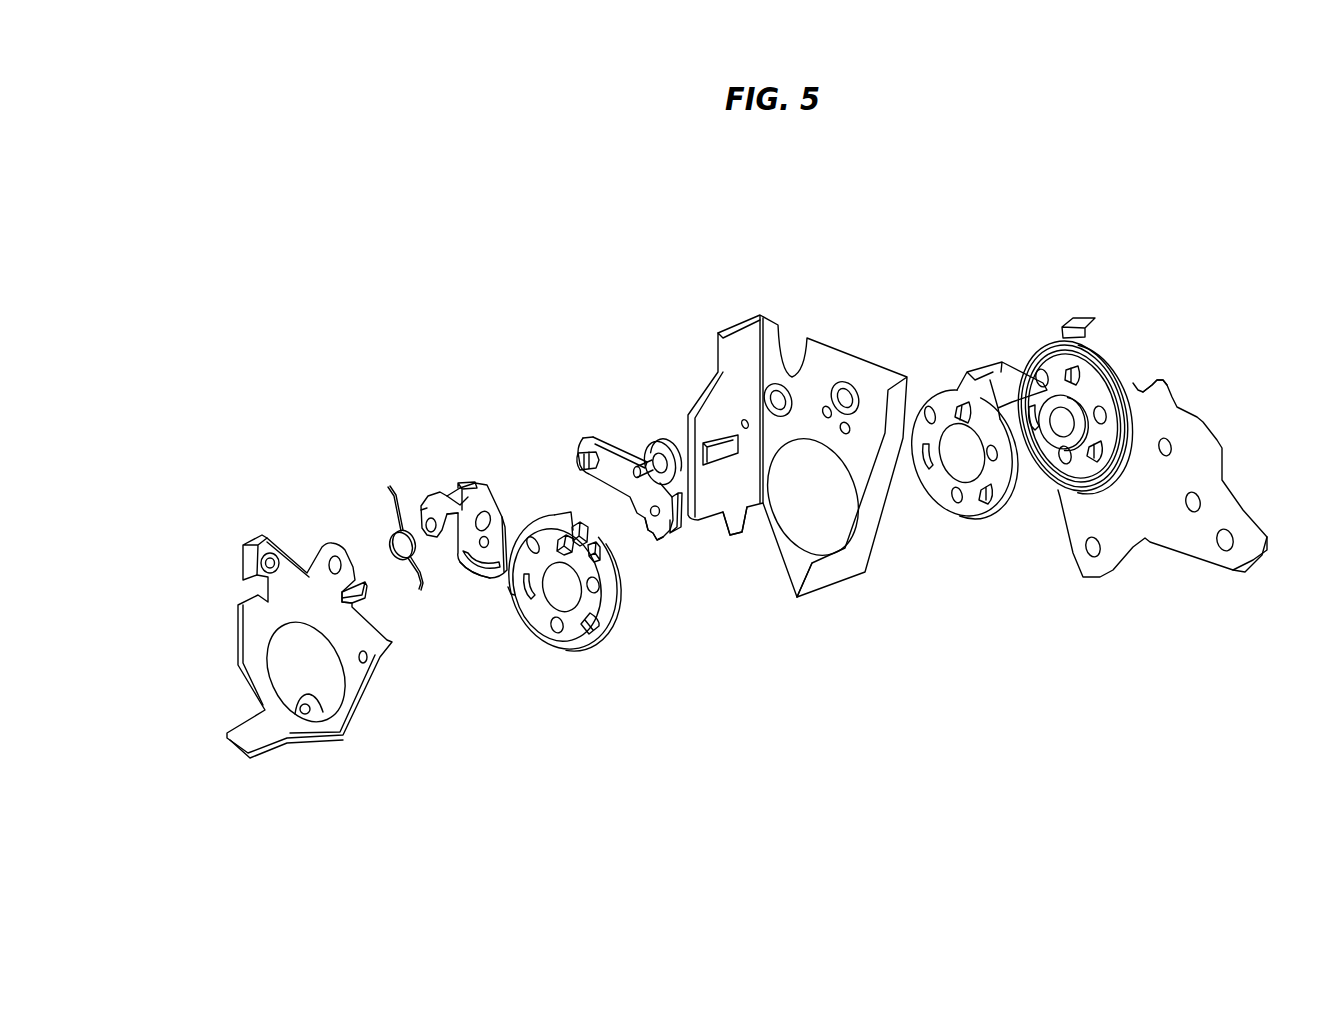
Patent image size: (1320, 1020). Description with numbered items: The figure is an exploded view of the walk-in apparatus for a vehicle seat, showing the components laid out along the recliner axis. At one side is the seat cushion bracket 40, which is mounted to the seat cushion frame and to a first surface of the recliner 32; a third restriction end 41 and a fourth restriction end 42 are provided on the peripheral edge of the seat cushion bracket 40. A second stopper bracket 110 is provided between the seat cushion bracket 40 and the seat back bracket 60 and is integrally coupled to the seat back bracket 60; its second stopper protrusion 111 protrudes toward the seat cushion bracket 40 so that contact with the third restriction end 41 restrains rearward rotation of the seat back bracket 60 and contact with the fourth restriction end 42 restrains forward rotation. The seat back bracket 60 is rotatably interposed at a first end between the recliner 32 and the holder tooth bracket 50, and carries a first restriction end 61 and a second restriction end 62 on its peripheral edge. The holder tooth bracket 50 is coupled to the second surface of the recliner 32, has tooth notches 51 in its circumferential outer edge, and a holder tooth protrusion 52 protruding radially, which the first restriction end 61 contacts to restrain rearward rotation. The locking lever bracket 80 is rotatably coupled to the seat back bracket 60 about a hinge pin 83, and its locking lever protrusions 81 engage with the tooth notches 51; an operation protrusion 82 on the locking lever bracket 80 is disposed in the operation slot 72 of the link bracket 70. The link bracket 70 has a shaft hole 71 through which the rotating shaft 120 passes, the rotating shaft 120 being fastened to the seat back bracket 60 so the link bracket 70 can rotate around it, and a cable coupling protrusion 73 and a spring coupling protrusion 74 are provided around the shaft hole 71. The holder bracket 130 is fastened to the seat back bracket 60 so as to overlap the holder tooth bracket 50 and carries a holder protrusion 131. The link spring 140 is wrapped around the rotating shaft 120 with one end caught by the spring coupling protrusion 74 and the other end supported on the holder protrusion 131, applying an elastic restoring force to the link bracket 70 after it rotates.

The recliner 32 is at (1100, 352).
The seat cushion bracket 40 is at (1163, 533).
The third restriction end 41 is at (1064, 326).
The fourth restriction end 42 is at (1152, 378).
The holder tooth bracket 50 is at (583, 663).
The tooth notches 51 is at (603, 552).
The holder tooth protrusion 52 is at (508, 590).
The seat back bracket 60 is at (827, 363).
The first restriction end 61 is at (757, 513).
The second restriction end 62 is at (823, 578).
The link bracket 70 is at (500, 507).
The shaft hole 71 is at (434, 490).
The operation slot 72 is at (471, 580).
The cable coupling protrusion 73 is at (430, 500).
The spring coupling protrusion 74 is at (467, 482).
The locking lever bracket 80 is at (593, 436).
The locking lever protrusions 81 is at (650, 540).
The operation protrusion 82 is at (684, 522).
The hinge pin 83 is at (578, 455).
The second stopper bracket 110 is at (978, 514).
The second stopper protrusion 111 is at (1003, 377).
The rotating shaft 120 is at (655, 455).
The holder bracket 130 is at (263, 636).
The holder protrusion 131 is at (366, 592).
The link spring 140 is at (390, 503).